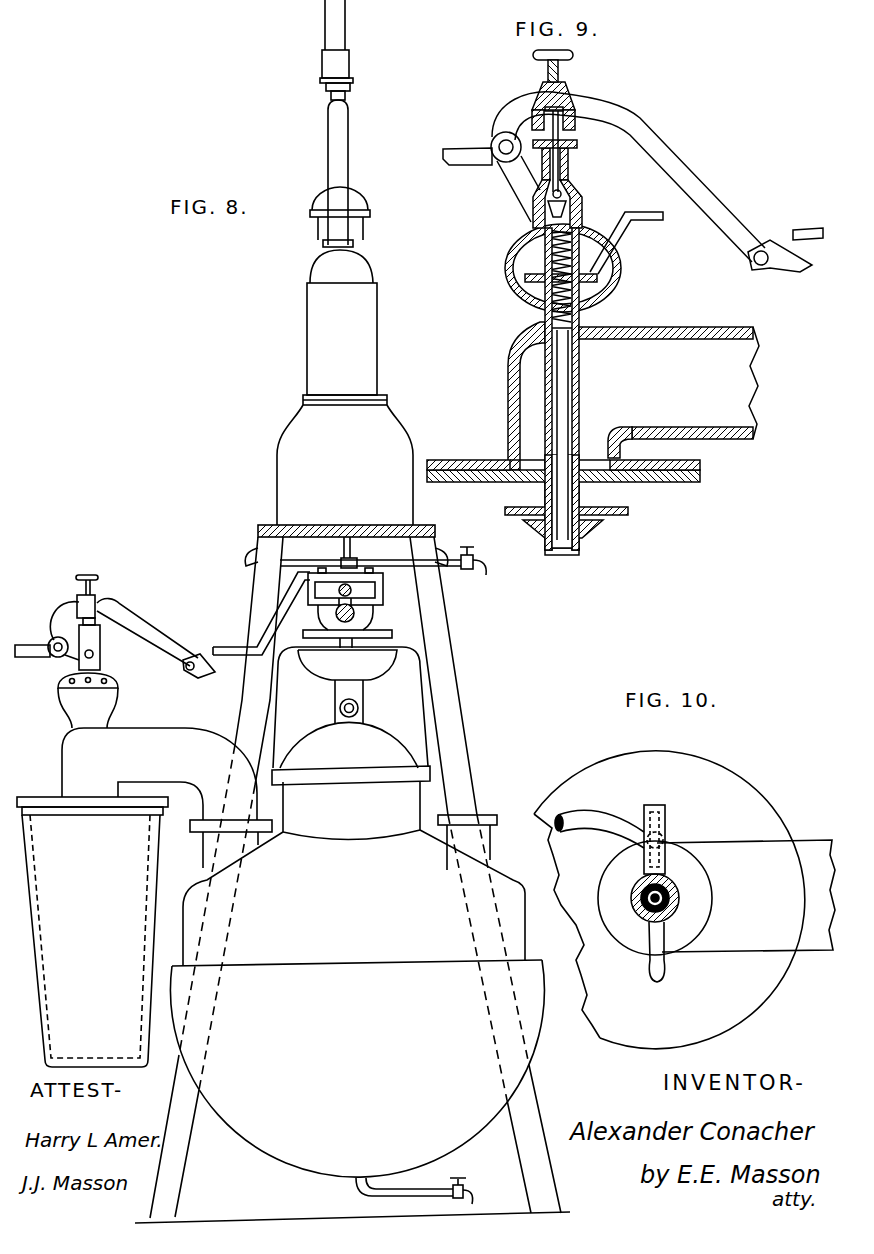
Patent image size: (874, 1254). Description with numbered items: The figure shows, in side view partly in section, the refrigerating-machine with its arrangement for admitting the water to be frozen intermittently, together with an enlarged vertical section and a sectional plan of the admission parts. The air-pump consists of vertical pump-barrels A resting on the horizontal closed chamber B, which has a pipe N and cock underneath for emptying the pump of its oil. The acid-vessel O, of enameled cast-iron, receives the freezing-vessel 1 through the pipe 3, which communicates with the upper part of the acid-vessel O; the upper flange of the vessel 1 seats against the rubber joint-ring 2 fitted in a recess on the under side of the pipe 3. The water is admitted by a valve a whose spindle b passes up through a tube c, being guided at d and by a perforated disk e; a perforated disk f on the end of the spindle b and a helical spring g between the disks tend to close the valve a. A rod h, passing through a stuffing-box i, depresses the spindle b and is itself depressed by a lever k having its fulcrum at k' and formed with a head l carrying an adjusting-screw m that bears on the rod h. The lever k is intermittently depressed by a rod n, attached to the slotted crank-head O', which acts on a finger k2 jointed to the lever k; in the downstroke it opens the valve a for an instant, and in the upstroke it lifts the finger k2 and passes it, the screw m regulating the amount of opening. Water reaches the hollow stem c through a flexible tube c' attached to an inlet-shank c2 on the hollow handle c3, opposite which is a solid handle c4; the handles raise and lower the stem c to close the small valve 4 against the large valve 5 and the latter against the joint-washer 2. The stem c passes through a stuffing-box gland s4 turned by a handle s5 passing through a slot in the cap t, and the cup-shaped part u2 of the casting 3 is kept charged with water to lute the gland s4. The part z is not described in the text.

In FIG. 8, the pump-barrel A is at (345, 202).
In FIG. 8, the closed chamber B is at (345, 465).
In FIG. 8, the pipe N is at (352, 549).
In FIG. 8, the slotted crank-head O' is at (350, 668).
In FIG. 8, the pin z is at (359, 708).
In FIG. 8, the rod n is at (261, 613).
In FIG. 9, the rod n is at (803, 225).
In FIG. 8, the adjusting-screw m is at (92, 585).
In FIG. 9, the adjusting-screw m is at (548, 71).
In FIG. 8, the lever k is at (147, 632).
In FIG. 9, the lever k is at (628, 177).
In FIG. 8, the fulcrum k' is at (54, 631).
In FIG. 9, the fulcrum k' is at (515, 177).
In FIG. 8, the finger k2 is at (199, 675).
In FIG. 9, the finger k2 is at (780, 267).
In FIG. 8, the flexible tube c' is at (32, 661).
In FIG. 9, the flexible tube c' is at (467, 167).
In FIG. 10, the flexible tube c' is at (599, 831).
In FIG. 8, the cup-shaped part u2 is at (88, 700).
In FIG. 9, the cup-shaped part u2 is at (618, 266).
In FIG. 8, the pipe 3 is at (167, 798).
In FIG. 9, the pipe 3 is at (669, 392).
In FIG. 10, the pipe 3 is at (746, 896).
In FIG. 8, the freezing-vessel 1 is at (92, 932).
In FIG. 8, the acid-vessel O is at (357, 928).
In FIG. 9, the head l is at (568, 104).
In FIG. 9, the rod h is at (560, 134).
In FIG. 9, the stuffing-box i is at (568, 166).
In FIG. 9, the disk f is at (580, 225).
In FIG. 9, the cap t is at (507, 249).
In FIG. 9, the handle s5 is at (626, 243).
In FIG. 9, the helical spring g is at (600, 291).
In FIG. 9, the stuffing-box gland s4 is at (572, 295).
In FIG. 9, the disk e is at (573, 342).
In FIG. 9, the tube c is at (573, 389).
In FIG. 10, the tube c is at (665, 898).
In FIG. 9, the guide d is at (574, 462).
In FIG. 9, the rubber ring 2 is at (570, 471).
In FIG. 9, the spindle b is at (566, 502).
In FIG. 9, the valve 5 is at (574, 504).
In FIG. 9, the valve 4 is at (565, 536).
In FIG. 9, the valve a is at (562, 564).
In FIG. 10, the hollow handle c3 is at (662, 820).
In FIG. 10, the inlet-shank c2 is at (664, 840).
In FIG. 10, the solid handle c4 is at (656, 963).